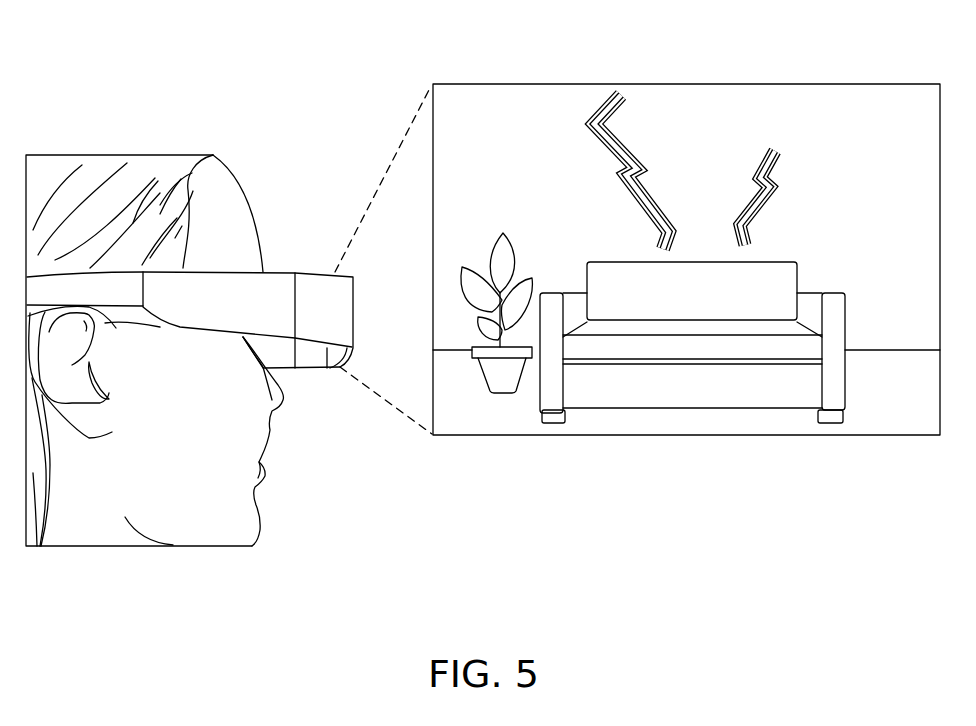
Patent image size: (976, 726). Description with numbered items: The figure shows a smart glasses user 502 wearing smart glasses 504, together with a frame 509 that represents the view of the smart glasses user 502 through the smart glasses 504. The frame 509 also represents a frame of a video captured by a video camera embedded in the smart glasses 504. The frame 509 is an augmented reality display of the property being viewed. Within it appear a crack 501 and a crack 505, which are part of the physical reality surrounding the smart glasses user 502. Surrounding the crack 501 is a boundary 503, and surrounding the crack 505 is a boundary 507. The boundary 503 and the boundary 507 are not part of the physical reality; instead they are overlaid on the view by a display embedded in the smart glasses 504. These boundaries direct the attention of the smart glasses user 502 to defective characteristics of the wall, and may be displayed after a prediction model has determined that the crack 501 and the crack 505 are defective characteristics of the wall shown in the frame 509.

The crack 501 is at (650, 217).
The smart glasses user 502 is at (120, 547).
The boundary 503 is at (627, 137).
The smart glasses 504 is at (276, 271).
The crack 505 is at (758, 207).
The boundary 507 is at (787, 164).
The frame 509 is at (728, 83).